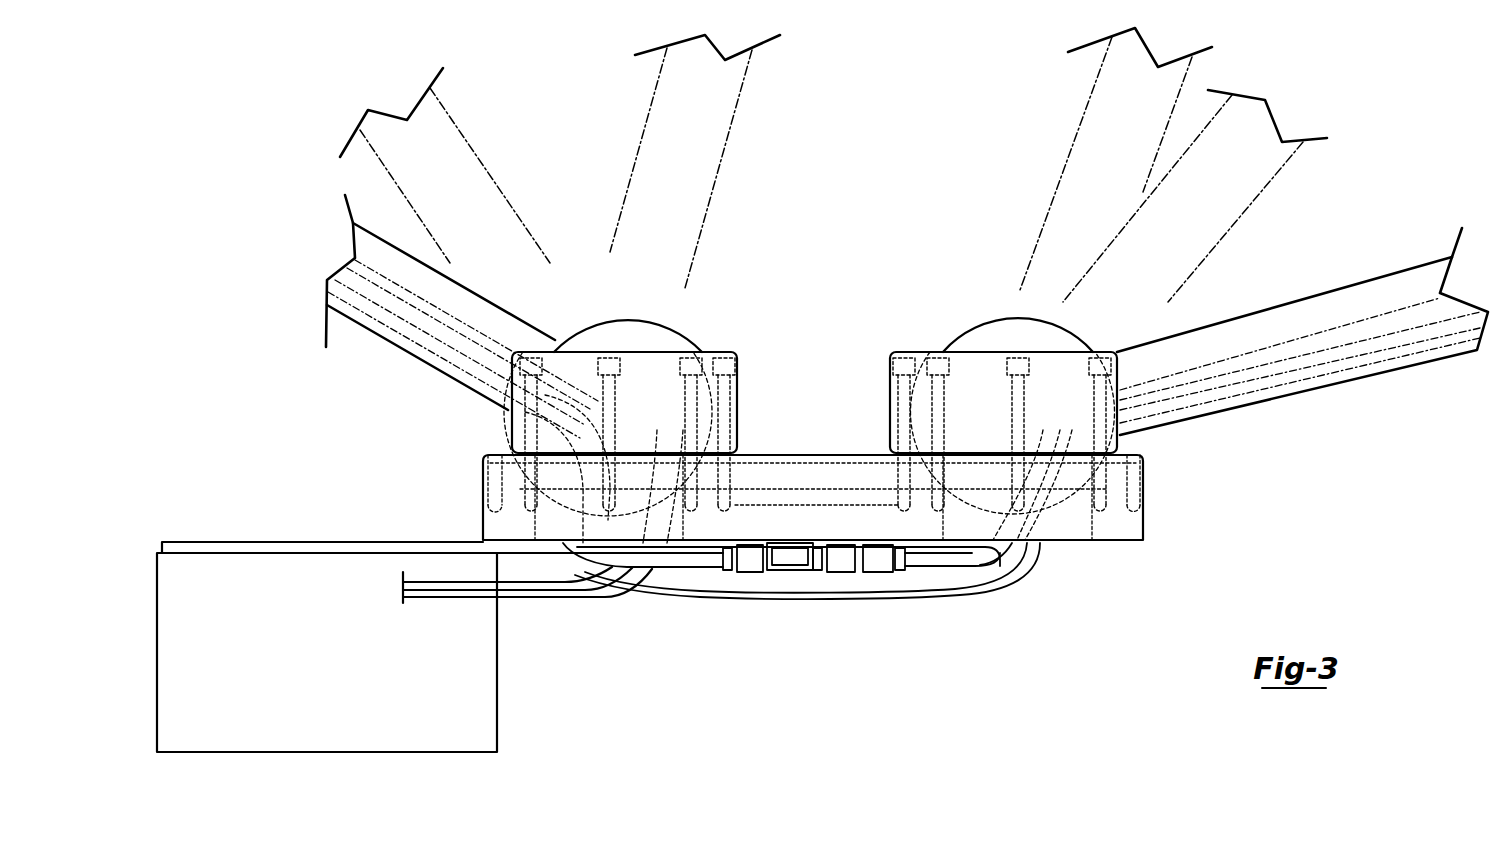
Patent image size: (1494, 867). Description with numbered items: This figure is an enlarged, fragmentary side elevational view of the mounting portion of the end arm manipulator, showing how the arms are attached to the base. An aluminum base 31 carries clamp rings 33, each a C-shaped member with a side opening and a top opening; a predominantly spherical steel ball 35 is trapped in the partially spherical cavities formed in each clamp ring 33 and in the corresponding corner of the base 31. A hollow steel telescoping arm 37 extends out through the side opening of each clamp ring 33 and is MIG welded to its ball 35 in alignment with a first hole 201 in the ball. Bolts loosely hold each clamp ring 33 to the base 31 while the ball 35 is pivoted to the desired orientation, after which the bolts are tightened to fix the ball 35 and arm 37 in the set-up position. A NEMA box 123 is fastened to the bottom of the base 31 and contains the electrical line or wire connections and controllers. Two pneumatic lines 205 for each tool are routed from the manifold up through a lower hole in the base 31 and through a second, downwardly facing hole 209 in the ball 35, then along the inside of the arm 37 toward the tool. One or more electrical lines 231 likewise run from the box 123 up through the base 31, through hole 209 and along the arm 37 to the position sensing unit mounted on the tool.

The base 31 is at (1135, 532).
The clamp ring 33 is at (742, 397).
The ball 35 is at (605, 337).
The telescoping arm 37 is at (418, 362).
The NEMA box 123 is at (287, 676).
The first hole 201 is at (1118, 383).
The pneumatic line 205 is at (972, 557).
The second downwardly facing hole 209 is at (1067, 505).
The electrical line 231 is at (845, 597).